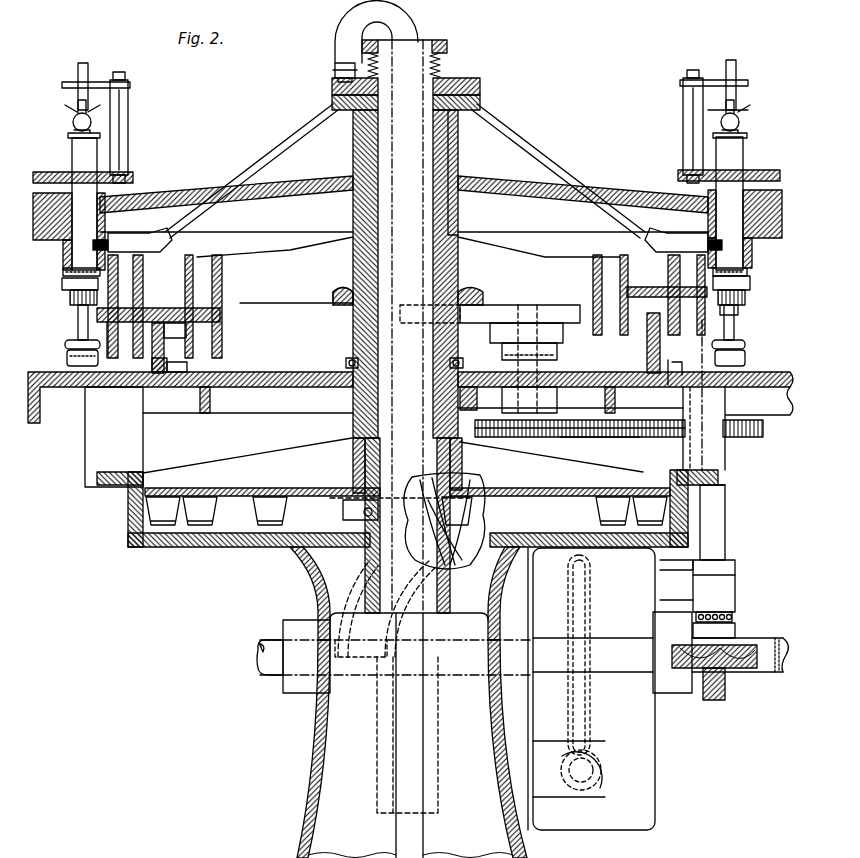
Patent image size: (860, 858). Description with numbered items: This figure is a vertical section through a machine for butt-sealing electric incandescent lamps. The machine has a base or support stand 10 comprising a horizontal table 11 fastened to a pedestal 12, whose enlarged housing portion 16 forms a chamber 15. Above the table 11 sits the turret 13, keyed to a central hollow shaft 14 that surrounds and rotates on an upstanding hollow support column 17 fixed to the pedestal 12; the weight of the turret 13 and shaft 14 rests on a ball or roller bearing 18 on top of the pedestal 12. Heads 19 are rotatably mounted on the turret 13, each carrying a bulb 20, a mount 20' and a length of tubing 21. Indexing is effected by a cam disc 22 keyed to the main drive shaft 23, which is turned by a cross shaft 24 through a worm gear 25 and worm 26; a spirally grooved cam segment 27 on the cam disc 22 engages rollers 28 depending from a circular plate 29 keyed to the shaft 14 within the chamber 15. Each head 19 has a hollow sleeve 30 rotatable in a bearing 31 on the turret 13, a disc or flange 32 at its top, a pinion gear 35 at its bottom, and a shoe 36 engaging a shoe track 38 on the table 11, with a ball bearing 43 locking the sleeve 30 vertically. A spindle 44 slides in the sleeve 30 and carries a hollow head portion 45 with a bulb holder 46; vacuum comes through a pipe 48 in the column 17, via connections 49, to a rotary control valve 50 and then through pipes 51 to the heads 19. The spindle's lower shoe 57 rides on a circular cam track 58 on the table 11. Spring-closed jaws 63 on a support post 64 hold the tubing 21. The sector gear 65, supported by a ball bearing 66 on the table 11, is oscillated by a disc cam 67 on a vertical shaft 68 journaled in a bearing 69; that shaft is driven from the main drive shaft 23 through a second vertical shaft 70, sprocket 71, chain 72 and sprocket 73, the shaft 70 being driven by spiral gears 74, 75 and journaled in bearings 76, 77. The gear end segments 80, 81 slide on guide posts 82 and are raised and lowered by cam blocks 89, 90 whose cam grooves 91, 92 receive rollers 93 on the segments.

The base or support stand 10 is at (312, 733).
The horizontal table 11 is at (288, 354).
The pedestal 12 is at (313, 775).
The carrier or turret 13 is at (166, 196).
The central hollow shaft 14 is at (353, 212).
The chamber 15 is at (293, 568).
The enlarged housing portion 16 is at (182, 548).
The hollow support column 17 is at (428, 212).
The ball or roller bearing 18 is at (345, 510).
The head 19 is at (136, 137).
The bulb 20 is at (404, 117).
The mount 20' is at (405, 103).
The length of tubing 21 is at (78, 72).
The cam disc 22 is at (447, 775).
The main drive shaft 23 is at (472, 672).
The cross shaft 24 is at (592, 797).
The worm gear 25 is at (592, 722).
The worm 26 is at (600, 774).
The cam segment 27 is at (482, 520).
The roller 28 is at (152, 512).
The circular plate 29 is at (245, 490).
The hollow sleeve 30 is at (76, 218).
The bearing 31 is at (64, 249).
The disc or flange 32 is at (55, 175).
The pinion gear 35 is at (70, 300).
The head rotative positioning disc or shoe 36 is at (62, 285).
The shoe track 38 is at (140, 270).
The ball bearing 43 is at (63, 271).
The spindle or rod 44 is at (78, 318).
The hollow head portion 45 is at (72, 150).
The bulb holder 46 is at (70, 137).
The pipe 48 is at (406, 28).
The connections 49 is at (337, 70).
The rotary control valve 50 is at (328, 93).
The connections or pipes 51 is at (288, 138).
The shoe or disc 57 is at (65, 348).
The cam track 58 is at (67, 358).
The spring-closed jaws 63 is at (95, 82).
The support post or rod 64 is at (126, 108).
The sector gear 65 is at (292, 304).
The ball bearing 66 is at (347, 362).
The disc cam 67 is at (565, 327).
The vertical shaft 68 is at (560, 395).
The bearing 69 is at (490, 403).
The second vertical shaft 70 is at (718, 512).
The sprocket 71 is at (733, 440).
The chain 72 is at (606, 438).
The sprocket 73 is at (590, 437).
The spiral gear 74 is at (760, 646).
The spiral gear 75 is at (713, 700).
The bearing 76 is at (733, 406).
The bearing 77 is at (735, 591).
The gear end segment 80 is at (738, 312).
The gear end segment 81 is at (107, 332).
The guide post 82 is at (140, 292).
The cam block 89 is at (670, 385).
The cam block 90 is at (150, 372).
The cam groove 91 is at (650, 366).
The cam groove 92 is at (164, 372).
The roller 93 is at (188, 338).